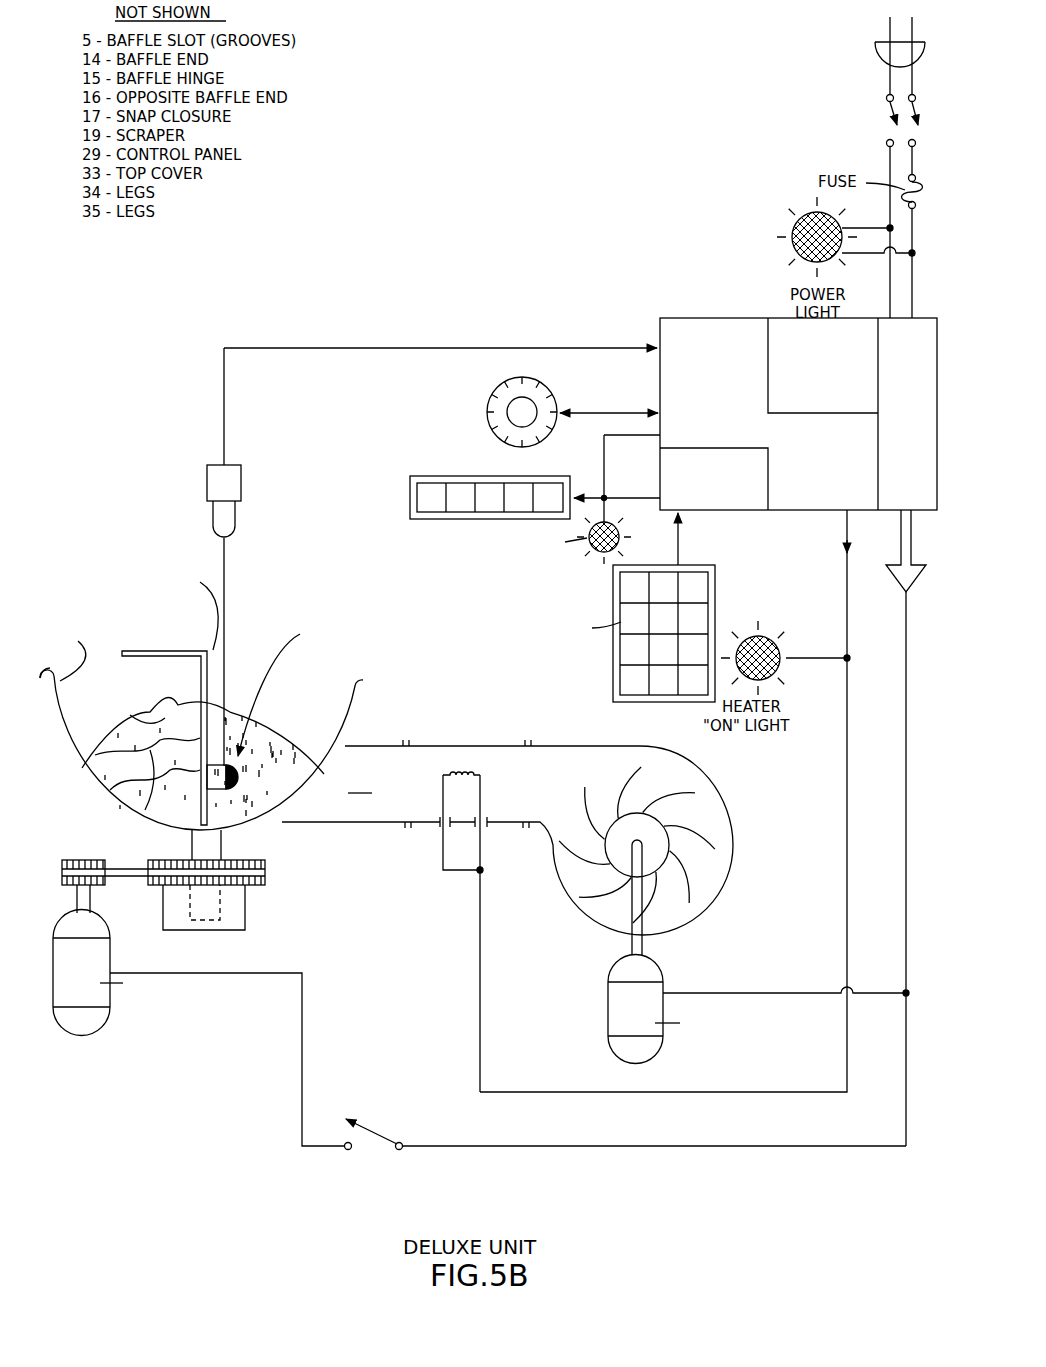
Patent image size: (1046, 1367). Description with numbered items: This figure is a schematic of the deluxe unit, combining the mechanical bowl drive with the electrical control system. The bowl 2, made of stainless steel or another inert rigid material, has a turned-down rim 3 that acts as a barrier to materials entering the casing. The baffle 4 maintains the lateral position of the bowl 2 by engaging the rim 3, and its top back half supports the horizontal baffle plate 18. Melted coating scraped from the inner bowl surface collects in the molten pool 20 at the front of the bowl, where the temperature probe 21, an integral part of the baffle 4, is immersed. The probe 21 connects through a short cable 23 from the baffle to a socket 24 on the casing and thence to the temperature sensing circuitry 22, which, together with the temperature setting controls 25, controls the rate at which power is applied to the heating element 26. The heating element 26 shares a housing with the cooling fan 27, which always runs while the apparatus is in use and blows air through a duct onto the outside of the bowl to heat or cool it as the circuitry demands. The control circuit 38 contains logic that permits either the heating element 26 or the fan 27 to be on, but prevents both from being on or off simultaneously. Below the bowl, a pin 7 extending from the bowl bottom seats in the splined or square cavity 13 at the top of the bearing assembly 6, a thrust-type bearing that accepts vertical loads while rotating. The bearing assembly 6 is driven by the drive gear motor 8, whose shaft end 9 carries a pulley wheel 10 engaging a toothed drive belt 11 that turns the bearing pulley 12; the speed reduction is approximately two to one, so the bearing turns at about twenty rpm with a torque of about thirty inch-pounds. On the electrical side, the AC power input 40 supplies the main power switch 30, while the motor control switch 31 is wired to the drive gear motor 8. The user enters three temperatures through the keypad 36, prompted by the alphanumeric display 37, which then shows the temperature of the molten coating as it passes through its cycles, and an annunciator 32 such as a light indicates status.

The bowl 2 is at (88, 766).
The rim 3 is at (55, 692).
The baffle 4 is at (211, 650).
The bearing assembly 6 is at (240, 907).
The pin 7 is at (222, 846).
The drive gear motor 8 is at (100, 997).
The shaft end 9 is at (88, 900).
The pulley wheel 10 is at (75, 858).
The toothed drive belt 11 is at (126, 863).
The pulley 12 is at (265, 878).
The cavity 13 is at (210, 919).
The horizontal baffle plate 18 is at (135, 651).
The molten pool 20 is at (286, 760).
The temperature probe 21 is at (240, 756).
The temperature sensing circuitry 22 is at (718, 388).
The short cable 23 is at (232, 570).
The socket 24 is at (209, 488).
The temperature setting controls 25 is at (540, 380).
The heating element 26 is at (483, 779).
The cooling fan 27 is at (645, 943).
The main power switch 30 is at (893, 112).
The motor control switch 31 is at (368, 1135).
The annunciator 32 is at (588, 546).
The keypad 36 is at (621, 632).
The alphanumeric display 37 is at (448, 483).
The control circuit 38 is at (758, 503).
The AC power plug 40 is at (875, 45).